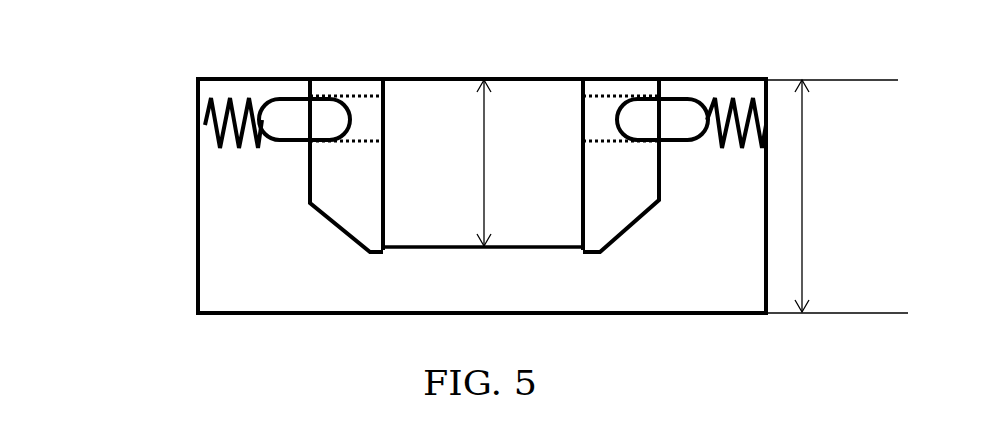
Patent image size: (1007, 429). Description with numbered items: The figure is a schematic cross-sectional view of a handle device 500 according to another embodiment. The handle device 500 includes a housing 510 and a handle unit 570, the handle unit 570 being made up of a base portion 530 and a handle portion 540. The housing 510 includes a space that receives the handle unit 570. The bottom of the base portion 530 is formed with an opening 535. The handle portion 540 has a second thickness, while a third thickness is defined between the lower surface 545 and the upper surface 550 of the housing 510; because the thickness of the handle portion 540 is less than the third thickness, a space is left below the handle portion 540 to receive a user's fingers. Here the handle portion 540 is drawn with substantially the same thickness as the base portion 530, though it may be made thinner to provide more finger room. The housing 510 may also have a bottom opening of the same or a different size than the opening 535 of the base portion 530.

The handle device 500 is at (158, 114).
The housing 510 is at (298, 255).
The base portion 530 is at (342, 168).
The opening 535 is at (483, 255).
The handle portion 540 is at (507, 113).
The lower surface 545 is at (705, 313).
The upper surface 550 is at (721, 79).
The handle unit 570 is at (610, 79).